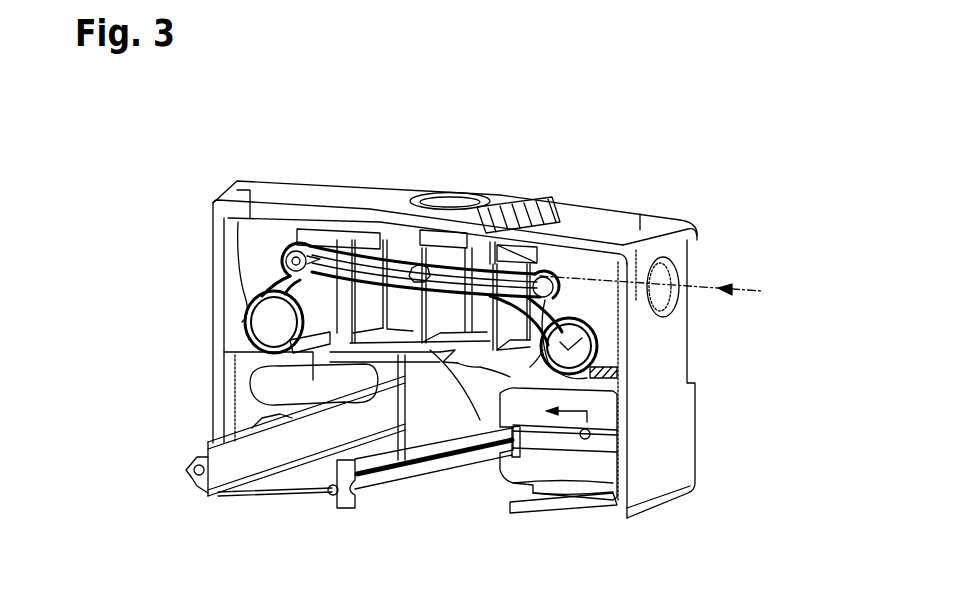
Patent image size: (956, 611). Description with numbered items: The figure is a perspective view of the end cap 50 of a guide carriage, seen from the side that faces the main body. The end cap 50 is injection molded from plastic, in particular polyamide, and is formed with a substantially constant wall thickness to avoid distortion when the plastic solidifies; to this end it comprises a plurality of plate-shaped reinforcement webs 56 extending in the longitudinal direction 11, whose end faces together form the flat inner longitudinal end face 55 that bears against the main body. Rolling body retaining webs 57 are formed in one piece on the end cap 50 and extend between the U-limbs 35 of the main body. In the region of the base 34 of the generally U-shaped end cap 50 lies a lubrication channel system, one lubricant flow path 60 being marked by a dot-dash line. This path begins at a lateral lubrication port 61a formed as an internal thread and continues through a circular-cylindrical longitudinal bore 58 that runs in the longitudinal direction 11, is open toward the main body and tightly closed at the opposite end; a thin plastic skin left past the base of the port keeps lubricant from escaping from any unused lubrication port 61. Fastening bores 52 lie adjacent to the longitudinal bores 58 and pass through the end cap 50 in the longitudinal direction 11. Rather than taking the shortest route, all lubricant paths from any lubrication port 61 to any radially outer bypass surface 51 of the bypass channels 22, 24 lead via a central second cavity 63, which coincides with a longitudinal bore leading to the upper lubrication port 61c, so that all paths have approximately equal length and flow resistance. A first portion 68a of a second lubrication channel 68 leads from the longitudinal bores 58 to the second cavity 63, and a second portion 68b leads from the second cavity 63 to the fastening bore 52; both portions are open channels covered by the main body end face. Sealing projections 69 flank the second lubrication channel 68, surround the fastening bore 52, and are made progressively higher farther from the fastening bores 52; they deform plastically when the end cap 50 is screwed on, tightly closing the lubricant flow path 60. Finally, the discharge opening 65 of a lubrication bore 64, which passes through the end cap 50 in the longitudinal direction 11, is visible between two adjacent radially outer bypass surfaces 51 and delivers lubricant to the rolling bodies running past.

The longitudinal direction 11 is at (558, 130).
The bypass channel 22 is at (445, 480).
The bypass channel 24 is at (445, 480).
The base 34 is at (600, 220).
The U-limb 35 is at (230, 417).
The end cap 50 is at (752, 182).
The radially outer bypass surface 51 is at (288, 387).
The fastening bore 52 is at (600, 358).
The inner longitudinal end face of the end cap 55 is at (250, 225).
The reinforcement web 56 is at (548, 240).
The rolling body retaining web 57 is at (227, 470).
The longitudinal bore 58 is at (245, 207).
The lubricant flow path 60 is at (705, 292).
The lubrication port 61 is at (443, 194).
The lateral lubrication port 61a is at (443, 194).
The upper lubrication port 61c is at (439, 203).
The second cavity 63 is at (325, 217).
The lubrication bore 64 is at (681, 446).
The discharge opening of the lubrication bore 65 is at (592, 440).
The second open lubrication channel 68 is at (325, 217).
The first portion of the second lubrication channel 68a is at (325, 217).
The second portion of the second lubrication channel 68b is at (397, 246).
The sealing projection 69 is at (294, 251).